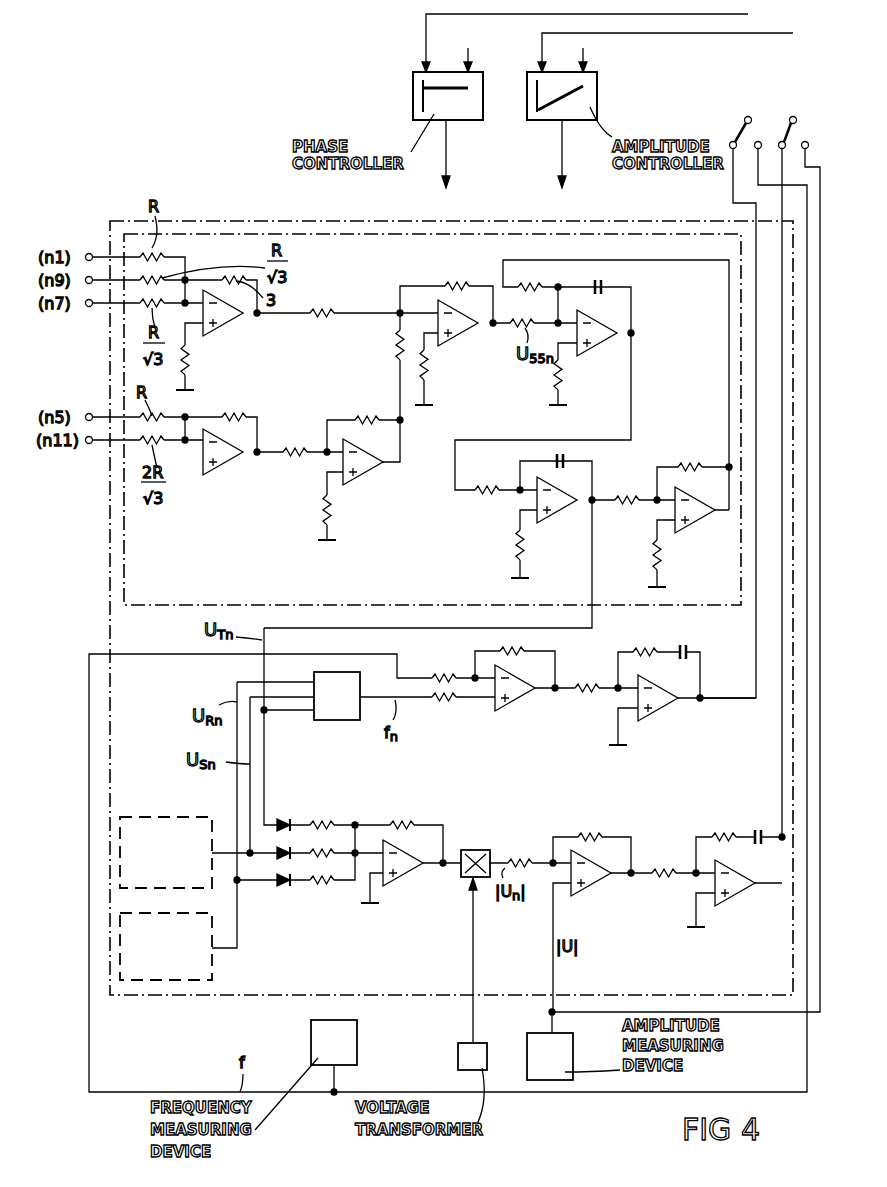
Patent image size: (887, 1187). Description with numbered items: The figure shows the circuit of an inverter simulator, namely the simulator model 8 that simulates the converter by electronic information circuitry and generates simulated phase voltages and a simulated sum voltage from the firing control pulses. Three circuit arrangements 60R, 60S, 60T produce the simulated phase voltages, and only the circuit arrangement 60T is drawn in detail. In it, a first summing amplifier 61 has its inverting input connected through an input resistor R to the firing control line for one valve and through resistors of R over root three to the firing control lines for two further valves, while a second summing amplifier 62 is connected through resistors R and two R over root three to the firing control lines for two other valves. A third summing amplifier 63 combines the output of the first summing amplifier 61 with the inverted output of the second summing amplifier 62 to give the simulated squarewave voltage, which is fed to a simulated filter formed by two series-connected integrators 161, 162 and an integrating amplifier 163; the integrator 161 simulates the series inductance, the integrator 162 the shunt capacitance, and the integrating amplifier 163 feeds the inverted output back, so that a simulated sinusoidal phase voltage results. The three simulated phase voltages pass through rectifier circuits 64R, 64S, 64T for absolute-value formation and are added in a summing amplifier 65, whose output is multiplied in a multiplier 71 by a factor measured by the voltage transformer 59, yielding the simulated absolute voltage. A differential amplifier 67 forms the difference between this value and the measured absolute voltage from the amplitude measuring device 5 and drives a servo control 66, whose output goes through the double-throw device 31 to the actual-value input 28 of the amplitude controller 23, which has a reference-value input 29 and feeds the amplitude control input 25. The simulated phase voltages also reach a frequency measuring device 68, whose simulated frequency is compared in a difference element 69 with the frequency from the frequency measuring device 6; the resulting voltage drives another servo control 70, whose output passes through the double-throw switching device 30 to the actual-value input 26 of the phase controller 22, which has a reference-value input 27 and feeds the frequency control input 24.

The amplitude measuring device 5 is at (573, 1060).
The frequency measuring device 6 is at (357, 1043).
The simulator model 8 is at (298, 221).
The phase controller 22 is at (413, 98).
The amplitude controller 23 is at (597, 98).
The frequency control input 24 is at (448, 162).
The amplitude control input 25 is at (564, 162).
The actual-value input 26 is at (425, 40).
The reference-value input 27 is at (470, 61).
The actual-value input 28 is at (540, 60).
The reference-value input 29 is at (585, 61).
The double-throw switching device 30 is at (744, 124).
The double-throw device 31 is at (789, 129).
The voltage transformer 59 is at (458, 1060).
The circuit arrangement 60T is at (352, 236).
The circuit arrangement 60S is at (186, 816).
The circuit arrangement 60R is at (155, 982).
The first summing amplifier 61 is at (250, 362).
The second summing amplifier 62 is at (250, 500).
The third summing amplifier 63 is at (485, 370).
The rectifier circuit 64T is at (297, 811).
The rectifier circuit 64S is at (290, 858).
The rectifier circuit 64R is at (283, 887).
The summing amplifier 65 is at (409, 812).
The servo control 66 is at (764, 933).
The differential amplifier 67 is at (625, 921).
The frequency measuring device 68 is at (337, 721).
The difference element 69 is at (539, 749).
The servo control 70 is at (684, 756).
The multiplier 71 is at (476, 848).
The integrator 161 is at (681, 334).
The integrator 162 is at (575, 554).
The integrating amplifier 163 is at (721, 559).